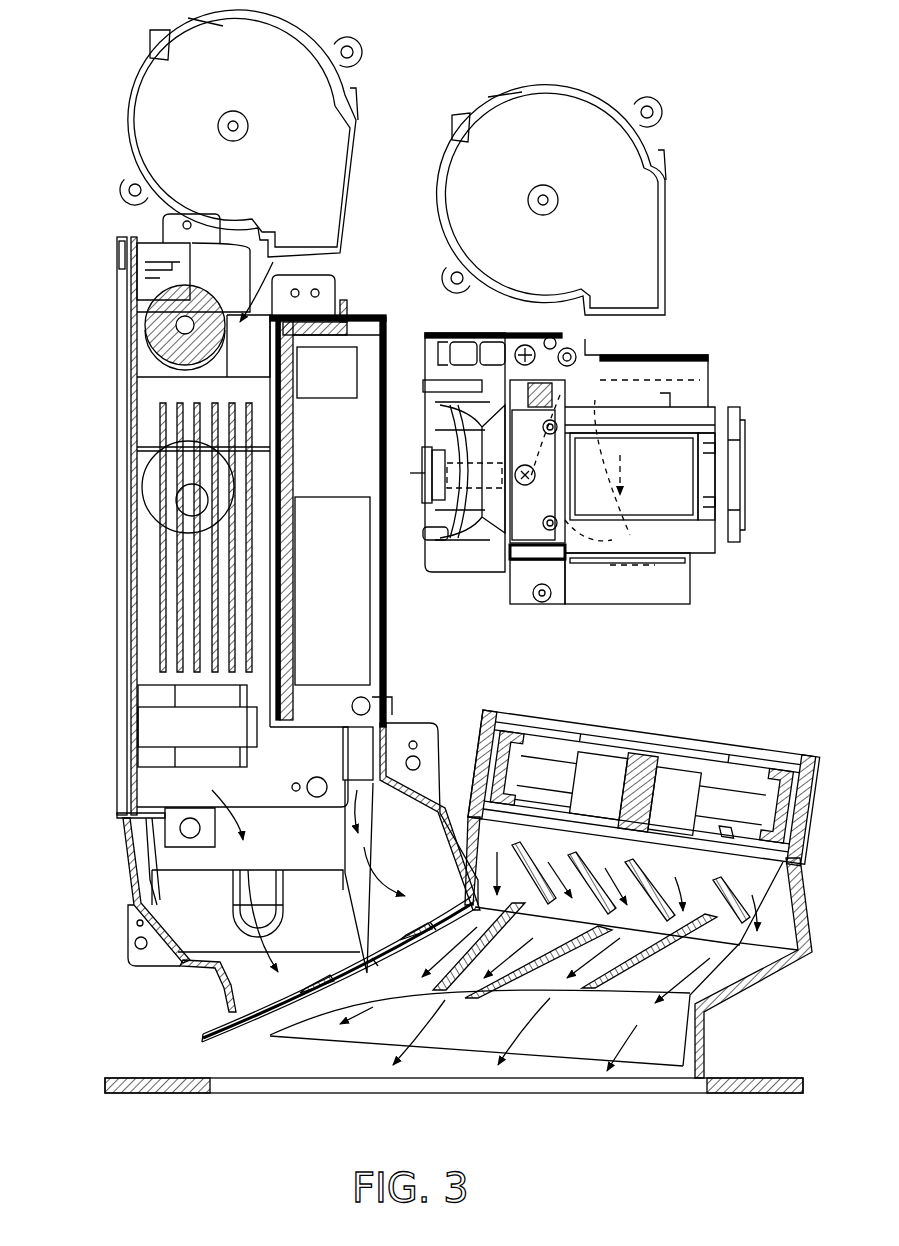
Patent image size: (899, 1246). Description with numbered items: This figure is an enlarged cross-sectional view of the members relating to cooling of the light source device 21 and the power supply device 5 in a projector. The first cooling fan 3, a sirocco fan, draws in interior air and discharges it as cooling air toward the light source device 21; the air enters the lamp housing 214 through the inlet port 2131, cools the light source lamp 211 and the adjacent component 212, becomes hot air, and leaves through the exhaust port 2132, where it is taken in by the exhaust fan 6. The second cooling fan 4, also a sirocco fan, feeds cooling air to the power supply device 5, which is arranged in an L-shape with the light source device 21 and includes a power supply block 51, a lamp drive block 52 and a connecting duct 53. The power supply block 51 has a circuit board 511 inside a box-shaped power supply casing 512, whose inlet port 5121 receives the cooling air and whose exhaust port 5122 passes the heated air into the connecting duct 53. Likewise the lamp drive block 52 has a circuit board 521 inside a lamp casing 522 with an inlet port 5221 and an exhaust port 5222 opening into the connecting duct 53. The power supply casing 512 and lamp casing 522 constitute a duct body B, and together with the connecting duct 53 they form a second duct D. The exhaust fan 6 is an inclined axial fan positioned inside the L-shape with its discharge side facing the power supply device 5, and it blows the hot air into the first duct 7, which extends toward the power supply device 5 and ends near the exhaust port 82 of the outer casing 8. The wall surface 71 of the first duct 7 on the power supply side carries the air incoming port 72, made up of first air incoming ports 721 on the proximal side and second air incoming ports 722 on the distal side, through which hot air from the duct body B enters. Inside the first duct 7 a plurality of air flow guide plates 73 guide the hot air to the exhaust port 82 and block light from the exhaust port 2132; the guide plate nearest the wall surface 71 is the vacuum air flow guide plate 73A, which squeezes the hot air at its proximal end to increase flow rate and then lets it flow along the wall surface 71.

The first cooling fan 3 is at (585, 90).
The second cooling fan 4 is at (288, 24).
The power supply device 5 is at (254, 609).
The power supply block 51 is at (126, 326).
The circuit board 511 is at (135, 395).
The power supply casing 512 is at (135, 443).
The inlet port 5121 is at (157, 250).
The exhaust port 5122 is at (157, 823).
The lamp drive block 52 is at (375, 317).
The circuit board 521 is at (296, 425).
The lamp casing 522 is at (393, 333).
The inlet port 5221 is at (327, 358).
The exhaust port 5222 is at (403, 790).
The connecting duct 53 is at (125, 840).
The light source device 21 is at (604, 478).
The light source lamp 211 is at (472, 490).
The color combining optical device 212 is at (498, 522).
The inlet port 2131 is at (618, 320).
The exhaust port 2132 is at (635, 620).
The lamp housing 214 is at (725, 538).
The exhaust fan 6 is at (820, 760).
The first duct 7 is at (493, 960).
The wall surface 71 is at (214, 1038).
The air incoming port 72 is at (356, 946).
The first air incoming ports 721 is at (422, 930).
The second air incoming ports 722 is at (318, 995).
The air flow guide plate 73 is at (597, 990).
The vacuum air flow guide plate 73A is at (452, 992).
The outer casing 8 is at (454, 1106).
The exhaust port 82 is at (702, 1090).
The duct body B is at (117, 757).
The second duct D is at (56, 750).